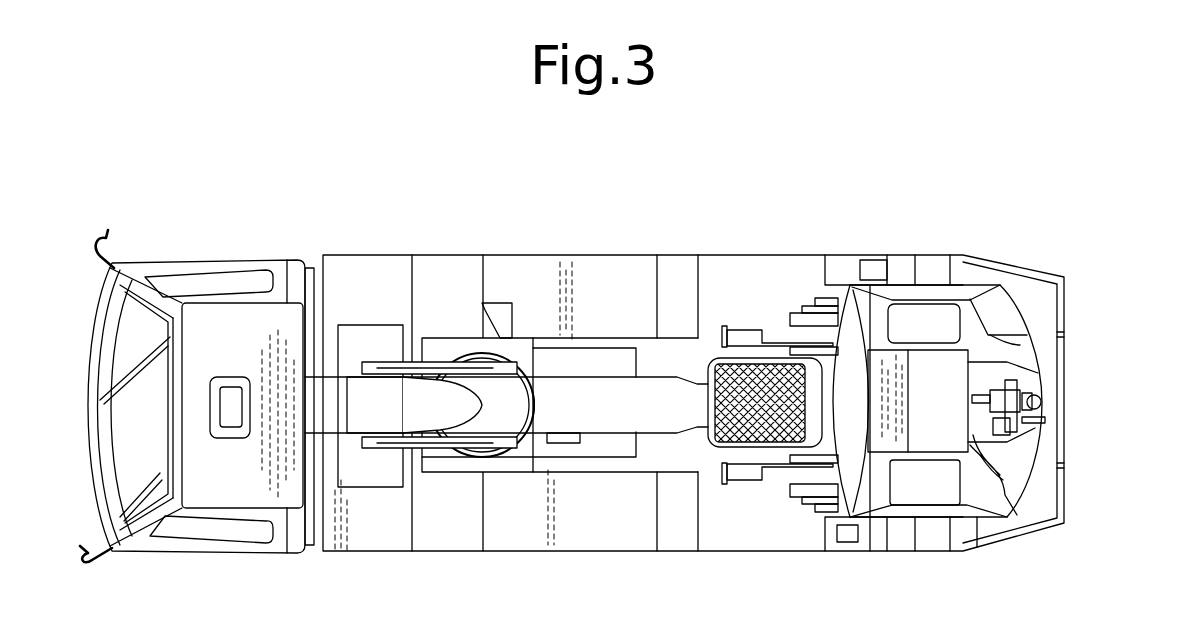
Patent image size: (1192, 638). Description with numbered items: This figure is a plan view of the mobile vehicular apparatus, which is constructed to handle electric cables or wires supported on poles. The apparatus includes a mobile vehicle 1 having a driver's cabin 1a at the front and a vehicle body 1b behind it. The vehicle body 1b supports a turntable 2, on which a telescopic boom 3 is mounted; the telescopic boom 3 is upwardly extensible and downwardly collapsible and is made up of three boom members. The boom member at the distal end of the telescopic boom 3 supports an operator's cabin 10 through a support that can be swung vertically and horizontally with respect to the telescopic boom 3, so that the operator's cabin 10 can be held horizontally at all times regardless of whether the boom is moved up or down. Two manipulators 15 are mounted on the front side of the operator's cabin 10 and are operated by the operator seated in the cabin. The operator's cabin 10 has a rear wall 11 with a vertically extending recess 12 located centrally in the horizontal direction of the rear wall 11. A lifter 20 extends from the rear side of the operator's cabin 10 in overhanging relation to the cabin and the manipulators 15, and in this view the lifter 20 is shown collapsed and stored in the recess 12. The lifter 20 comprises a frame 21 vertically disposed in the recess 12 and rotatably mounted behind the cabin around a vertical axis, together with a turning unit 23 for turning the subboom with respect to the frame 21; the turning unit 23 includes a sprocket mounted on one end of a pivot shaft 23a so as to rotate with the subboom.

The mobile vehicle 1 is at (583, 240).
The driver's cabin 1a is at (220, 317).
The vehicle body 1b is at (633, 277).
The turntable 2 is at (393, 450).
The telescopic boom 3 is at (607, 420).
The operator's cabin 10 is at (908, 498).
The rear wall 11 is at (1023, 303).
The recess 12 is at (1000, 343).
The manipulators 15 is at (752, 328).
The lifter 20 is at (1045, 397).
The frame 21 is at (1005, 483).
The turning unit 23 is at (1045, 423).
The pivot shaft 23a is at (1010, 377).